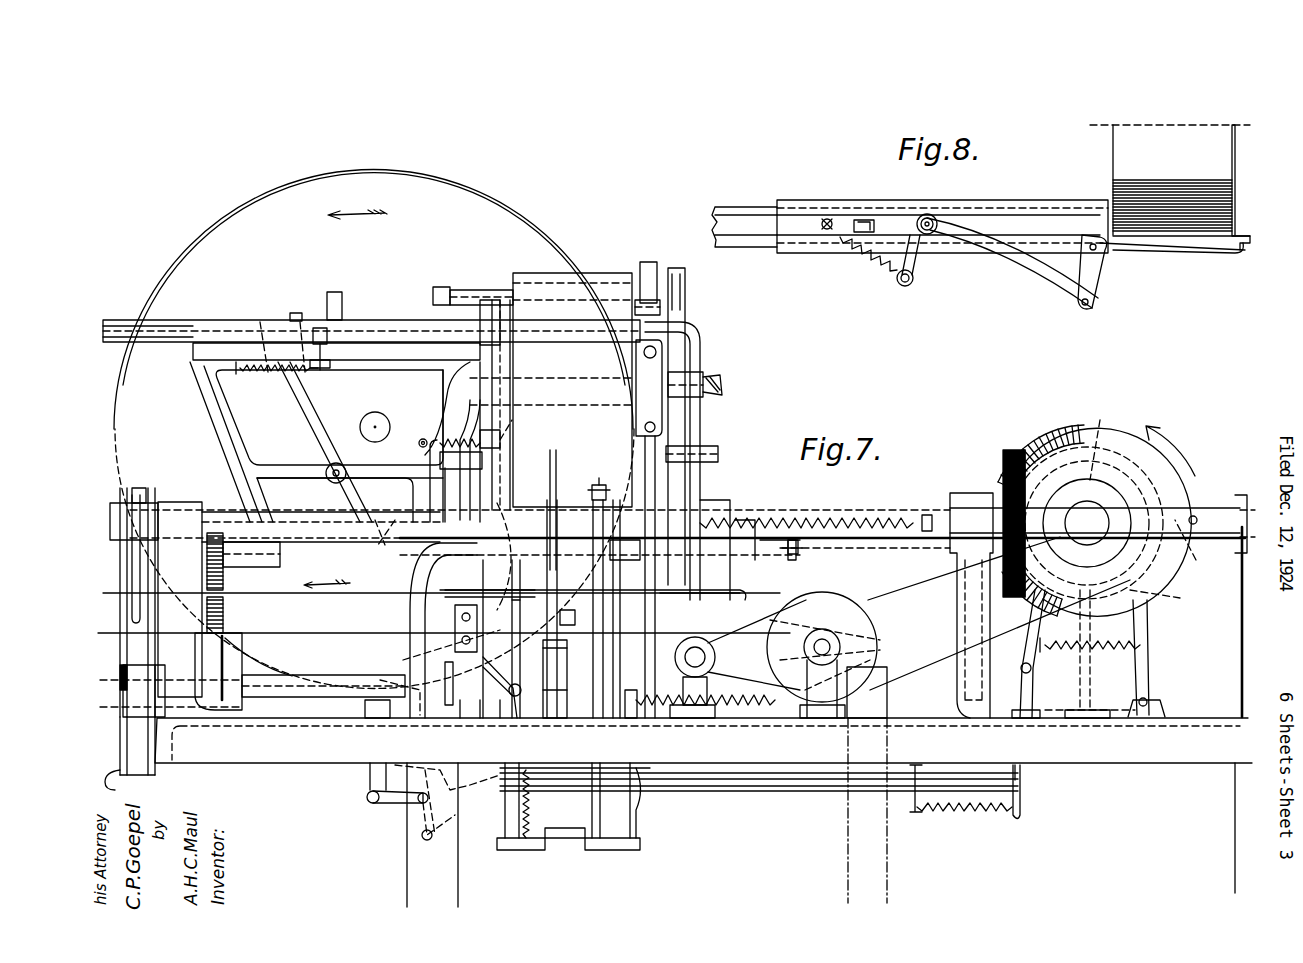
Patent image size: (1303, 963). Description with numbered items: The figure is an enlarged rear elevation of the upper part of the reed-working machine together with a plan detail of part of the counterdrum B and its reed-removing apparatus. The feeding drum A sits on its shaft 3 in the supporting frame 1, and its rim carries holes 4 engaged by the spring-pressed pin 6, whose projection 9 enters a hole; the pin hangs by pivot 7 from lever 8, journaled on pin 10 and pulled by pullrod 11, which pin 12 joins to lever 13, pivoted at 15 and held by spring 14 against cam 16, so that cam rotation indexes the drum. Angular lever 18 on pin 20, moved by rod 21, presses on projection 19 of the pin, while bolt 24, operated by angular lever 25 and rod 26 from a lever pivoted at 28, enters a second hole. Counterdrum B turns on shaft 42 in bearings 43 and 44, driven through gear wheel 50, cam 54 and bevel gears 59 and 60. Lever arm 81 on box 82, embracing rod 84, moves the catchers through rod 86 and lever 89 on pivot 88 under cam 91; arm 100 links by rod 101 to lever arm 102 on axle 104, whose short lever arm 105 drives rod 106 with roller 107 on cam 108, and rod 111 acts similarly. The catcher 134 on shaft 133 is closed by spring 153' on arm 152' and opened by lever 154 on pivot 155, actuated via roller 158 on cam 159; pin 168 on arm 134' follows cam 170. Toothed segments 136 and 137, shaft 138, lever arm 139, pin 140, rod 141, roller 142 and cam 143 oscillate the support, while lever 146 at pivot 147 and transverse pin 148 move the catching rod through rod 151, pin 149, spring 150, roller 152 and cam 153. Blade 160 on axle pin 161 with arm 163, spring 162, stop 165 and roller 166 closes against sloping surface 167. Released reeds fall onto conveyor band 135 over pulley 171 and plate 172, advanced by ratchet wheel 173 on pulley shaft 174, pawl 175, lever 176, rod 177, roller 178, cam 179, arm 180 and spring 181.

In FIG. 7, the supporting frame 1 is at (312, 755).
In FIG. 7, the shaft 3 is at (378, 421).
In FIG. 7, the holes 4 is at (350, 170).
In FIG. 7, the pawl or pin 6 is at (455, 702).
In FIG. 7, the pivot 7 is at (392, 680).
In FIG. 7, the lever 8 is at (445, 752).
In FIG. 7, the projection 9 is at (440, 672).
In FIG. 7, the pin 10 is at (400, 840).
In FIG. 7, the pullrod 11 is at (462, 755).
In FIG. 7, the pin 12 is at (1022, 788).
In FIG. 7, the lever 13 is at (1022, 800).
In FIG. 7, the spring 14 is at (965, 812).
In FIG. 7, the pivot 15 is at (1020, 668).
In FIG. 7, the cam 16 is at (1120, 470).
In FIG. 7, the angular lever 18 is at (499, 708).
In FIG. 7, the projection 19 is at (471, 708).
In FIG. 7, the pin 20 is at (515, 690).
In FIG. 7, the rod 21 is at (745, 774).
In FIG. 7, the bolt 24 is at (366, 697).
In FIG. 7, the angular lever 25 is at (398, 805).
In FIG. 7, the rod 26 is at (930, 665).
In FIG. 7, the pivot 28 is at (1149, 702).
In FIG. 7, the shaft 42 is at (720, 385).
In FIG. 7, the bearing 43 is at (457, 476).
In FIG. 7, the bearing 44 is at (718, 584).
In FIG. 7, the gear wheel 50 is at (1169, 595).
In FIG. 7, the cam 54 is at (1200, 516).
In FIG. 7, the bevel gear wheel 59 is at (1003, 462).
In FIG. 7, the bevel gear wheel 60 is at (1047, 460).
In FIG. 7, the lever arm 81 is at (650, 500).
In FIG. 7, the nave or box 82 is at (644, 560).
In FIG. 7, the rod 84 is at (766, 548).
In FIG. 7, the rod 86 is at (535, 612).
In FIG. 7, the pivot 88 is at (565, 685).
In FIG. 7, the lever 89 is at (565, 659).
In FIG. 7, the cam 91 is at (555, 475).
In FIG. 7, the arm 100 is at (547, 566).
In FIG. 7, the rod 101 is at (532, 635).
In FIG. 7, the lever arm 102 is at (520, 850).
In FIG. 7, the axle 104 is at (566, 840).
In FIG. 7, the short lever arm 105 is at (614, 846).
In FIG. 7, the rod 106 is at (105, 768).
In FIG. 7, the roller 107 is at (599, 480).
In FIG. 7, the cam 108 is at (605, 560).
In FIG. 7, the rod 111 is at (688, 318).
In FIG. 7, the shaft 133 is at (486, 308).
In FIG. 8, the shaft 133 is at (1100, 250).
In FIG. 7, the catcher 134 is at (551, 391).
In FIG. 8, the catcher 134 is at (1182, 227).
In FIG. 8, the arm 134' is at (1114, 272).
In FIG. 7, the conveyor band 135 is at (276, 600).
In FIG. 7, the toothed segment 136 is at (224, 575).
In FIG. 7, the toothed segment 137 is at (226, 615).
In FIG. 7, the shaft 138 is at (302, 690).
In FIG. 7, the lever arm 139 is at (142, 785).
In FIG. 7, the pin 140 is at (150, 775).
In FIG. 7, the rod 141 is at (152, 768).
In FIG. 7, the roller 142 is at (140, 488).
In FIG. 7, the cam 143 is at (134, 614).
In FIG. 7, the lever 146 is at (322, 433).
In FIG. 8, the lever 146 is at (862, 217).
In FIG. 7, the pivot 147 is at (343, 466).
In FIG. 7, the transverse pin 148 is at (381, 522).
In FIG. 7, the pin 149 is at (800, 546).
In FIG. 7, the spring 150 is at (497, 520).
In FIG. 7, the rod 151 is at (905, 540).
In FIG. 7, the roller 152 is at (1201, 547).
In FIG. 7, the arm 152' is at (526, 429).
In FIG. 7, the cam 153 is at (1220, 500).
In FIG. 7, the spring 153' is at (450, 454).
In FIG. 7, the lever 154 is at (702, 344).
In FIG. 8, the lever 154 is at (1236, 254).
In FIG. 7, the pivot 155 is at (718, 456).
In FIG. 7, the roller 158 is at (760, 550).
In FIG. 7, the cam 159 is at (715, 515).
In FIG. 7, the blade 160 is at (654, 304).
In FIG. 7, the axle pin 161 is at (636, 292).
In FIG. 8, the spring 162 is at (880, 265).
In FIG. 8, the arm 163 is at (925, 262).
In FIG. 8, the stop 165 is at (882, 220).
In FIG. 8, the roller 166 is at (913, 282).
In FIG. 7, the sloping surface 167 is at (452, 522).
In FIG. 8, the pin 168 is at (1083, 308).
In FIG. 7, the cam 170 is at (485, 583).
In FIG. 7, the pulley 171 is at (843, 598).
In FIG. 7, the plate 172 is at (660, 592).
In FIG. 7, the ratchet wheel 173 is at (840, 640).
In FIG. 7, the pulley shaft 174 is at (775, 612).
In FIG. 7, the pawl 175 is at (850, 616).
In FIG. 7, the oscillating lever member 176 is at (845, 630).
In FIG. 7, the rod 177 is at (918, 583).
In FIG. 7, the roller 178 is at (1025, 612).
In FIG. 7, the cam 179 is at (1107, 433).
In FIG. 7, the arm 180 is at (780, 640).
In FIG. 7, the spring 181 is at (744, 698).
In FIG. 7, the feeding drum A is at (423, 197).
In FIG. 7, the counterdrum B is at (583, 427).
In FIG. 8, the counterdrum B is at (1220, 174).